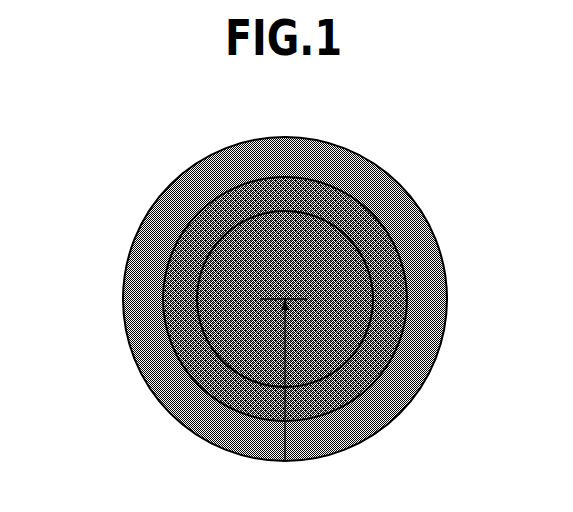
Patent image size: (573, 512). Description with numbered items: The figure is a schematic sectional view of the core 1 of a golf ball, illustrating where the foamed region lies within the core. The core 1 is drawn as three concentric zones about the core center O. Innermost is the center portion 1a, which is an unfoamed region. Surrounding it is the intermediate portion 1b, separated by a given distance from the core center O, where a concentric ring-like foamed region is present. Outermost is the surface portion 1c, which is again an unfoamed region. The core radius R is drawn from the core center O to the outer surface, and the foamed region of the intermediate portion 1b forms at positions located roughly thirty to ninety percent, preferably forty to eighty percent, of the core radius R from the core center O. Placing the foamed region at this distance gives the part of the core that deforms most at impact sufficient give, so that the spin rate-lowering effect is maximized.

The core 1 is at (284, 293).
The center portion 1a is at (227, 330).
The intermediate portion 1b is at (180, 284).
The surface portion 1c is at (163, 222).
The core radius R is at (298, 383).
The core center O is at (285, 299).